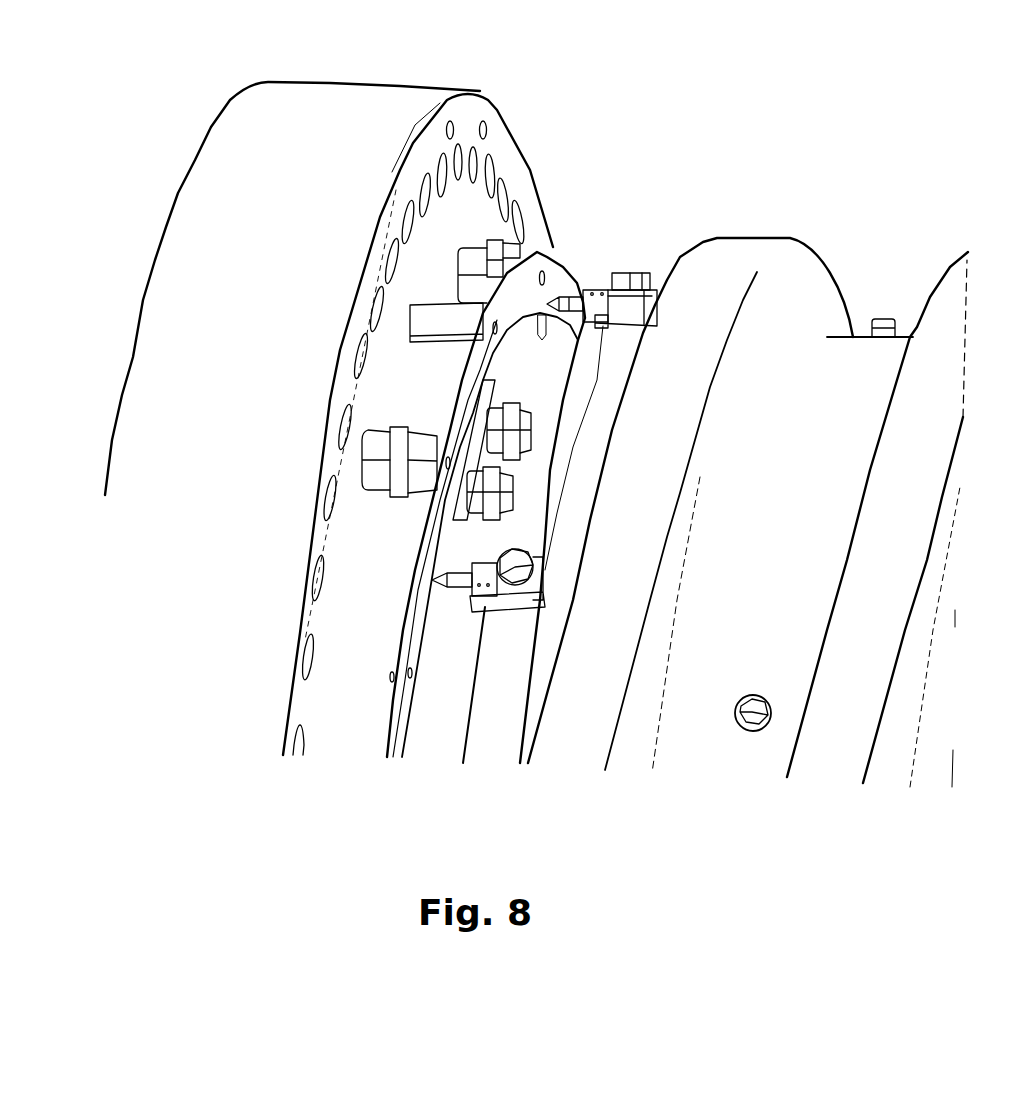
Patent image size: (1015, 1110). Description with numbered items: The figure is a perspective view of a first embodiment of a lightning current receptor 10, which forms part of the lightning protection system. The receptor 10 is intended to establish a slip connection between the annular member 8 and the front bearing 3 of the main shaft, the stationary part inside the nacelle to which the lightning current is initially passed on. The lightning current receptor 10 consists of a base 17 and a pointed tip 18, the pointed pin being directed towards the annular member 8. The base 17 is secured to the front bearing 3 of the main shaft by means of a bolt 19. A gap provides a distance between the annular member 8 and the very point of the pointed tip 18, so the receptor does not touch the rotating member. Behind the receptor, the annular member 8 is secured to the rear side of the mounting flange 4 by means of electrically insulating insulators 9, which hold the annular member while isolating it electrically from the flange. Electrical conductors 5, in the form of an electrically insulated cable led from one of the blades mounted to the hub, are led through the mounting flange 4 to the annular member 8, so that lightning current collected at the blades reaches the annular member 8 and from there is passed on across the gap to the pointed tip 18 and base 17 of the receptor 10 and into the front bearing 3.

The front bearing 3 is at (675, 753).
The mounting flange 4 is at (497, 135).
The electrical conductors 5 is at (137, 326).
The annular member 8 is at (402, 757).
The electrically insulating insulators 9 is at (495, 247).
The lightning current receptor 10 is at (433, 320).
The base 17 is at (658, 284).
The pointed tip 18 is at (577, 290).
The bolt 19 is at (623, 273).